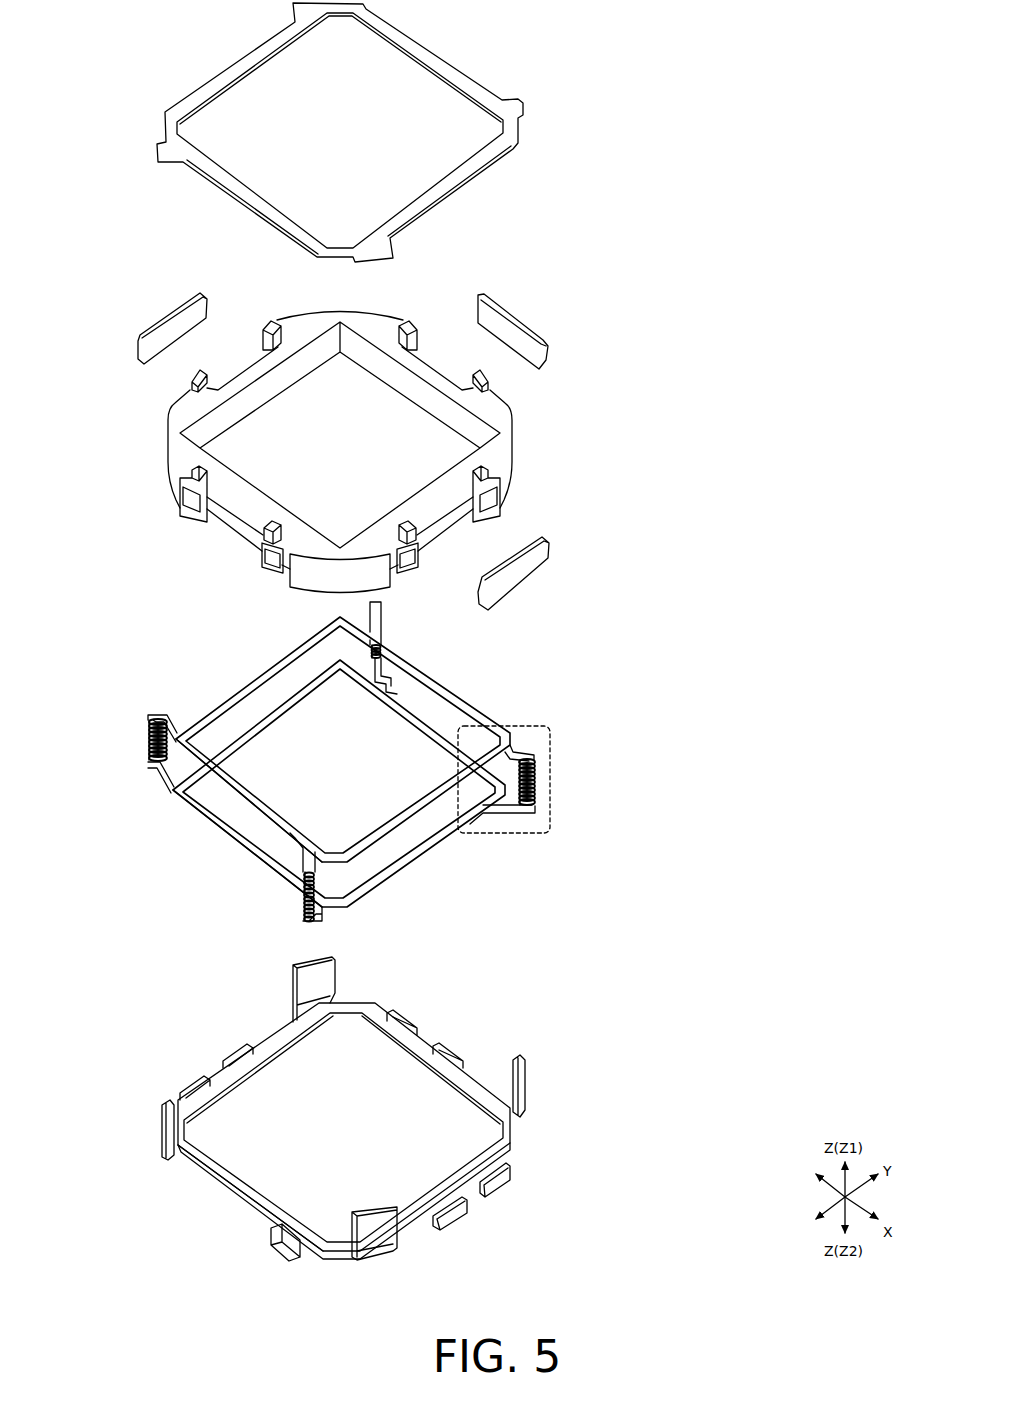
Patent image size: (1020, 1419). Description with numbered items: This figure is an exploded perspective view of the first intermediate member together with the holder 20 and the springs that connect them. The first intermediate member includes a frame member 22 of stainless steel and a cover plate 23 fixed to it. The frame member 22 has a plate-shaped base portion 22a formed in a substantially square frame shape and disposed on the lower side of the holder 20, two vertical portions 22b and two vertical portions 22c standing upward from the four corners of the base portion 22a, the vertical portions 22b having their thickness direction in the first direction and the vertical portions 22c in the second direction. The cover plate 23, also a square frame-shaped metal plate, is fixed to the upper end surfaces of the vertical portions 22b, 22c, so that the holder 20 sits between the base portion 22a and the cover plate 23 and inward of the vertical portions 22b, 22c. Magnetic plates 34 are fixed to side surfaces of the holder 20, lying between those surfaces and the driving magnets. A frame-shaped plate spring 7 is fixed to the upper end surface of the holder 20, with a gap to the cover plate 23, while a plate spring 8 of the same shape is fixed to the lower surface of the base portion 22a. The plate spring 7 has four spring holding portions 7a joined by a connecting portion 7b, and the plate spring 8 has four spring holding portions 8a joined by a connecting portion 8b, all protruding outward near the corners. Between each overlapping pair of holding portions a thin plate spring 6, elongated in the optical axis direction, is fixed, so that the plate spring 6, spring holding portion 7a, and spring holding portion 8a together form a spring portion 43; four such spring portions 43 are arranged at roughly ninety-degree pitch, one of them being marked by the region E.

The cover plate 23 is at (526, 129).
The magnetic plate 34 is at (163, 312).
The holder 20 is at (520, 434).
The plate spring 7 is at (255, 673).
The connecting portion 7b is at (249, 800).
The spring holding portion 7a is at (380, 616).
The plate spring 8 is at (206, 820).
The connecting portion 8b is at (247, 848).
The spring holding portion 8a is at (398, 666).
The plate spring 6 is at (370, 647).
The spring portion 43 is at (409, 633).
The enlarged region E is at (554, 836).
The frame member 22 is at (226, 1192).
The base portion 22a is at (250, 1198).
The vertical portion 22b is at (337, 975).
The vertical portion 22c is at (166, 1102).